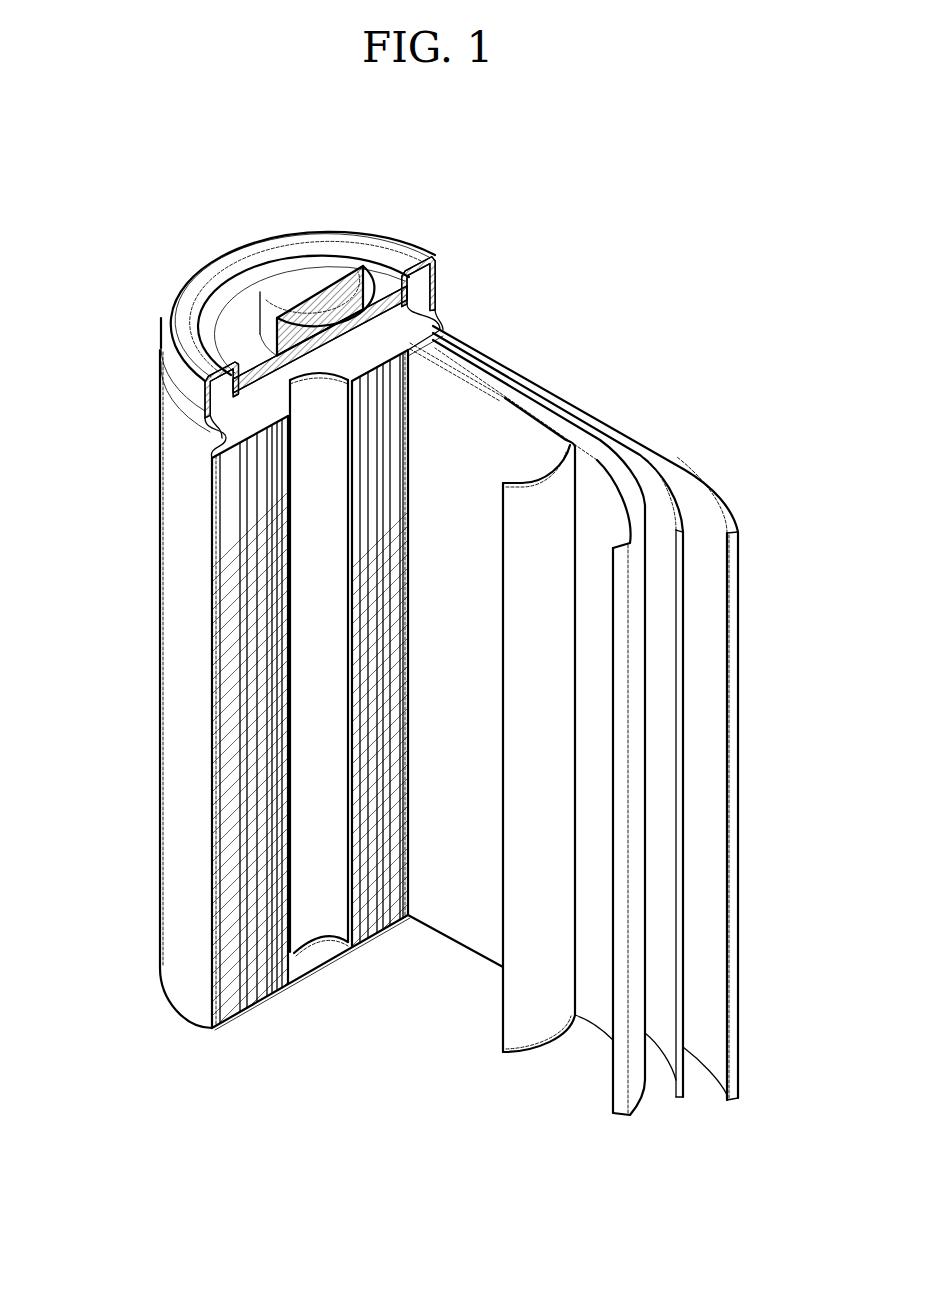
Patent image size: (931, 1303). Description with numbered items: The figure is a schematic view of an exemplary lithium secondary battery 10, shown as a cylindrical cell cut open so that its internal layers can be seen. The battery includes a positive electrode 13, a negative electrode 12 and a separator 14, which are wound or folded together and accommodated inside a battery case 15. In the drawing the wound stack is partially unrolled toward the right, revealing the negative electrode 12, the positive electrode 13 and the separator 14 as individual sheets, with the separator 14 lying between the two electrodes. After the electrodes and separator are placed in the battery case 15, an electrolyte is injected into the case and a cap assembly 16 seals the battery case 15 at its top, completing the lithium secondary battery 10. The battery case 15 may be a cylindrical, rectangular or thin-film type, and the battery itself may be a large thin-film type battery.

The lithium secondary battery 10 is at (603, 257).
The negative electrode 12 is at (725, 512).
The positive electrode 13 is at (598, 458).
The separator 14 is at (510, 405).
The battery case 15 is at (174, 674).
The cap assembly 16 is at (298, 272).